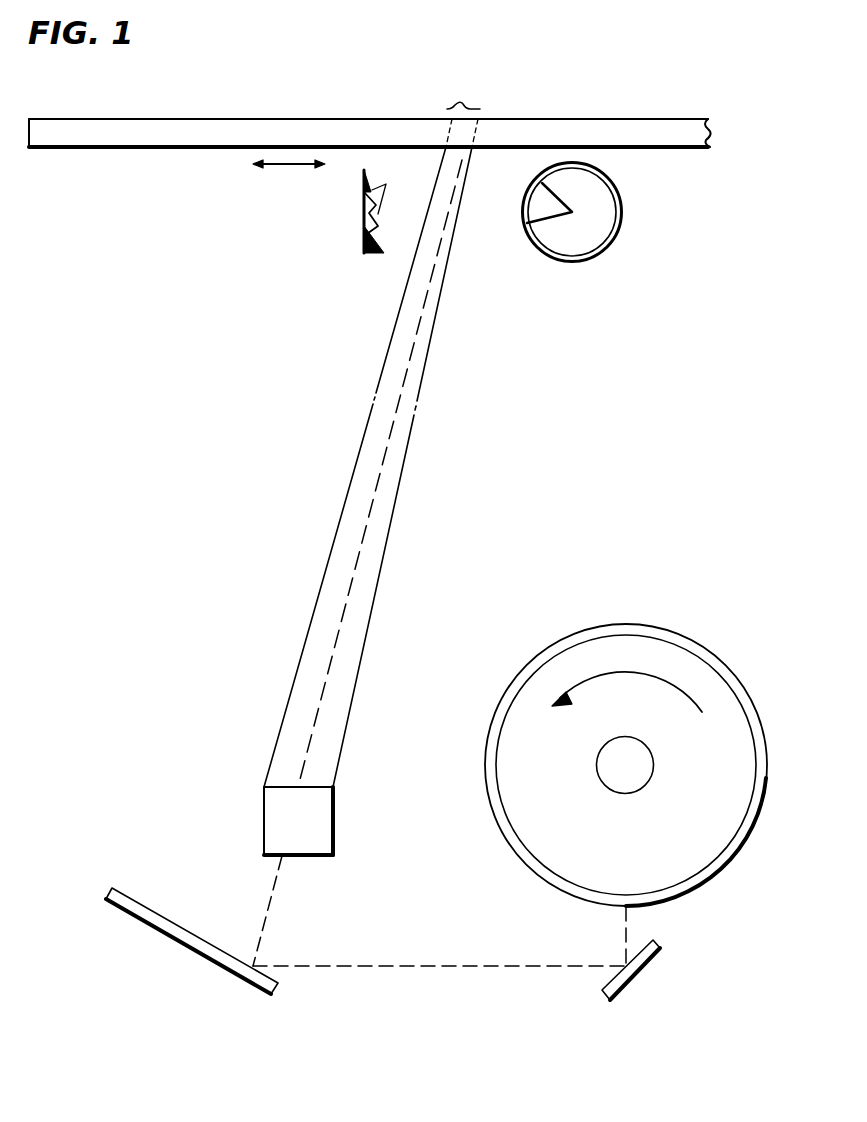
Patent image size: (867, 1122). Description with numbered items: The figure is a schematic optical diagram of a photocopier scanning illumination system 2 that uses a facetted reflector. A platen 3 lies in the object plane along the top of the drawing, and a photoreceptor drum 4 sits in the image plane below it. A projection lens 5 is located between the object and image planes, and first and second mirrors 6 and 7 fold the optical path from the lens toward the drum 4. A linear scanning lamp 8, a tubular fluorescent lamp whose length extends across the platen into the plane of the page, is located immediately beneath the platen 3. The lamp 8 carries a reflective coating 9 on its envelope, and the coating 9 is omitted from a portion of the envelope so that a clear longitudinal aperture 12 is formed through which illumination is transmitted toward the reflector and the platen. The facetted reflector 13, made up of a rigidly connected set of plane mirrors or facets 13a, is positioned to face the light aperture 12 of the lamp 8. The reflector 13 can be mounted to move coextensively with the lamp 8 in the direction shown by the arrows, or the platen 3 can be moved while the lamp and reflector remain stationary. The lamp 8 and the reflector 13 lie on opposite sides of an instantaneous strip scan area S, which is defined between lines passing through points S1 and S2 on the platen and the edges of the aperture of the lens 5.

The scanning illumination system 2 is at (352, 353).
The platen 3 is at (268, 118).
The photoreceptor drum 4 is at (544, 647).
The projection lens 5 is at (334, 822).
The first mirror 6 is at (140, 902).
The second mirror 7 is at (660, 950).
The linear scanning lamp 8 is at (600, 231).
The reflective coating 9 is at (615, 188).
The longitudinal aperture 12 is at (528, 204).
The facetted reflector 13 is at (364, 204).
The plane mirrors 13a is at (400, 195).
The instantaneous strip scan area S is at (463, 95).
The point S1 is at (438, 119).
The point S2 is at (491, 120).